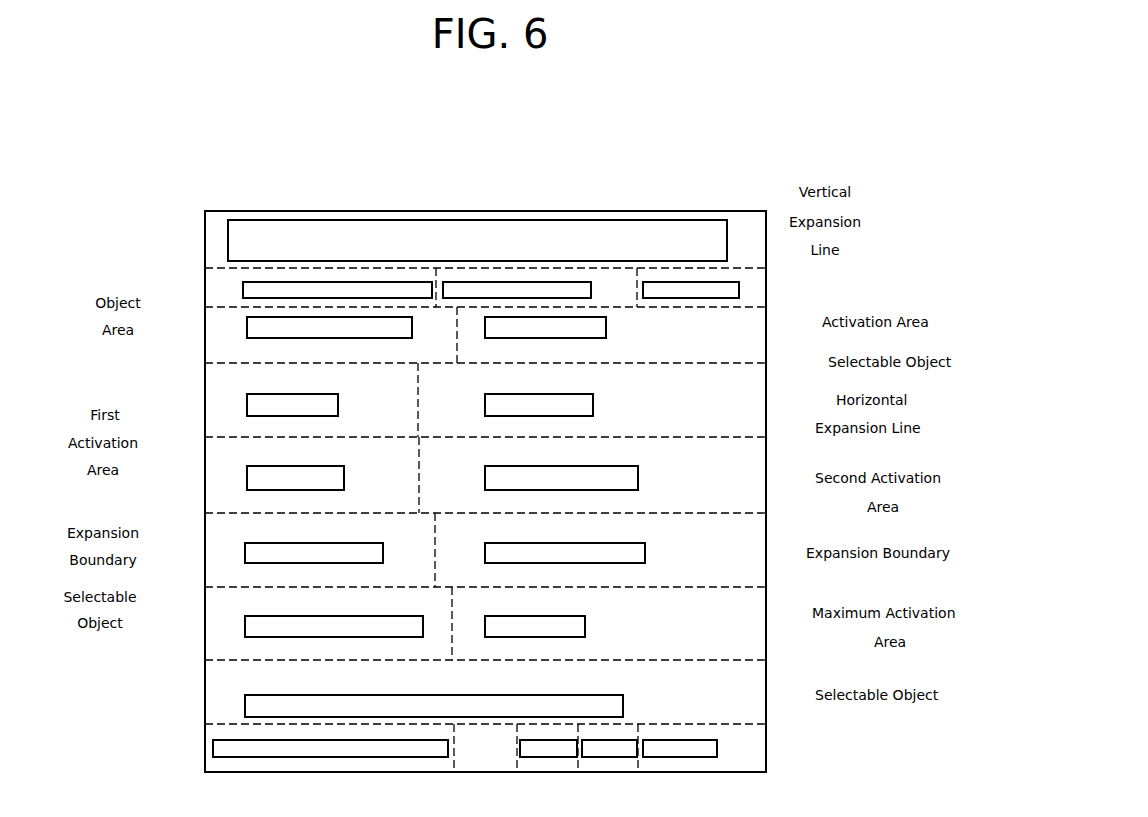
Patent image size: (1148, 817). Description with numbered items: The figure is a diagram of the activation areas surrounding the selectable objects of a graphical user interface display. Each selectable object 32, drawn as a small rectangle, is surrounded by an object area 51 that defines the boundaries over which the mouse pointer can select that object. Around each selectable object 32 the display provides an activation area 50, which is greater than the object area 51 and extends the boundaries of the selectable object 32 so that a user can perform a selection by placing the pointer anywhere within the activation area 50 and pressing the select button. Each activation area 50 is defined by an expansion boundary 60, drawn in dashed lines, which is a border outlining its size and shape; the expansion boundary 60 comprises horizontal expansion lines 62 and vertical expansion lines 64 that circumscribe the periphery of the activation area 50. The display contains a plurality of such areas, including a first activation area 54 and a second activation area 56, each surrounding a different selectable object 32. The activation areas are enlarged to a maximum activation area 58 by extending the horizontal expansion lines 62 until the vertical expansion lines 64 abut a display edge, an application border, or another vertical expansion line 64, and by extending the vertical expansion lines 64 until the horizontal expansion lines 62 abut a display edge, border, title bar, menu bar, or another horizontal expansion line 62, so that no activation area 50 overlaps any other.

The selectable object 32 is at (606, 330).
The activation area 50 is at (753, 299).
The object area 51 is at (247, 330).
The first activation area 54 is at (218, 453).
The second activation area 56 is at (732, 483).
The maximum activation area 58 is at (745, 642).
The expansion boundary 60 is at (215, 514).
The horizontal expansion line 62 is at (718, 366).
The vertical expansion line 64 is at (641, 274).